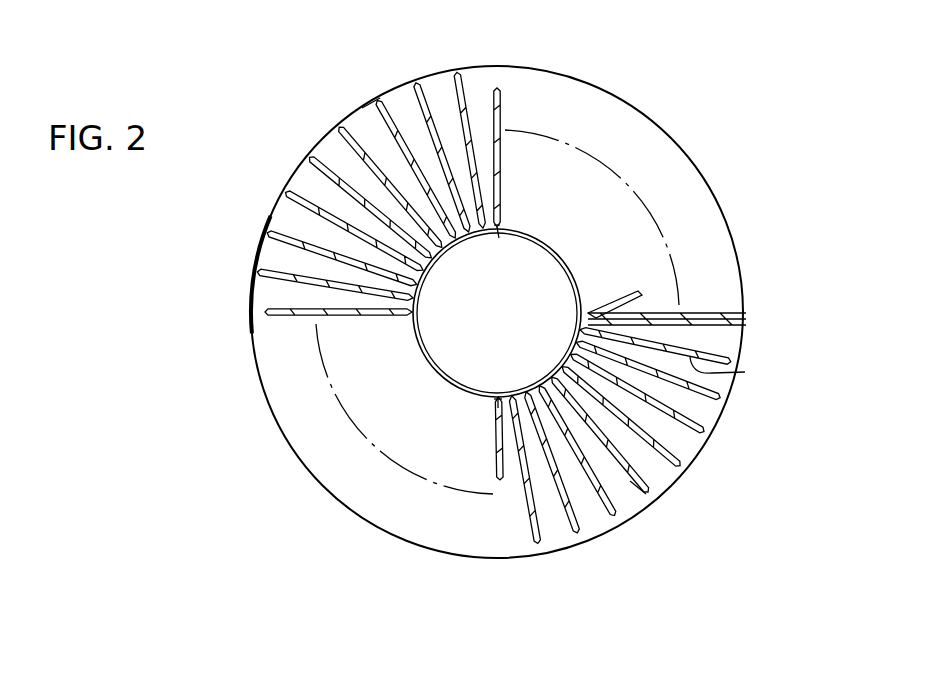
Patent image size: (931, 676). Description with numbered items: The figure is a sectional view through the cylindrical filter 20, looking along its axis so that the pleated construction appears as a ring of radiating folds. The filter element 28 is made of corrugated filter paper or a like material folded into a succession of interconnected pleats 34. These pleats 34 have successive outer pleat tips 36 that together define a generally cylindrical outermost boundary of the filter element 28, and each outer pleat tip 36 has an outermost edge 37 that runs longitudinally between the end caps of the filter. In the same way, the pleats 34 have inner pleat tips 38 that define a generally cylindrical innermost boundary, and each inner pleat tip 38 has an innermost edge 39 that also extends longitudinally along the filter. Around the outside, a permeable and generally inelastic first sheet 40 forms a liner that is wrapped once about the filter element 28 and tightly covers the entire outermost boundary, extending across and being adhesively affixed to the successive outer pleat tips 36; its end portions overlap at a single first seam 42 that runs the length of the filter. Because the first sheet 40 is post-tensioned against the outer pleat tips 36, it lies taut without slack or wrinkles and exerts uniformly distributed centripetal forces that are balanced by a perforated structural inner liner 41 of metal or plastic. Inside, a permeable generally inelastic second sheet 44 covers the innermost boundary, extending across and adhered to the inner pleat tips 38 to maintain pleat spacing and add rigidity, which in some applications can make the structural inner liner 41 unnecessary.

The cylindrical filter 20 is at (731, 462).
The filter element 28 is at (703, 311).
The pleats 34 is at (745, 372).
The outer pleat tips 36 is at (378, 99).
The outermost edge 37 is at (378, 99).
The inner pleat tips 38 is at (498, 228).
The innermost edge 39 is at (498, 219).
The first sheet 40 is at (560, 70).
The structural inner liner 41 is at (420, 347).
The first seam 42 is at (253, 264).
The second sheet 44 is at (420, 347).